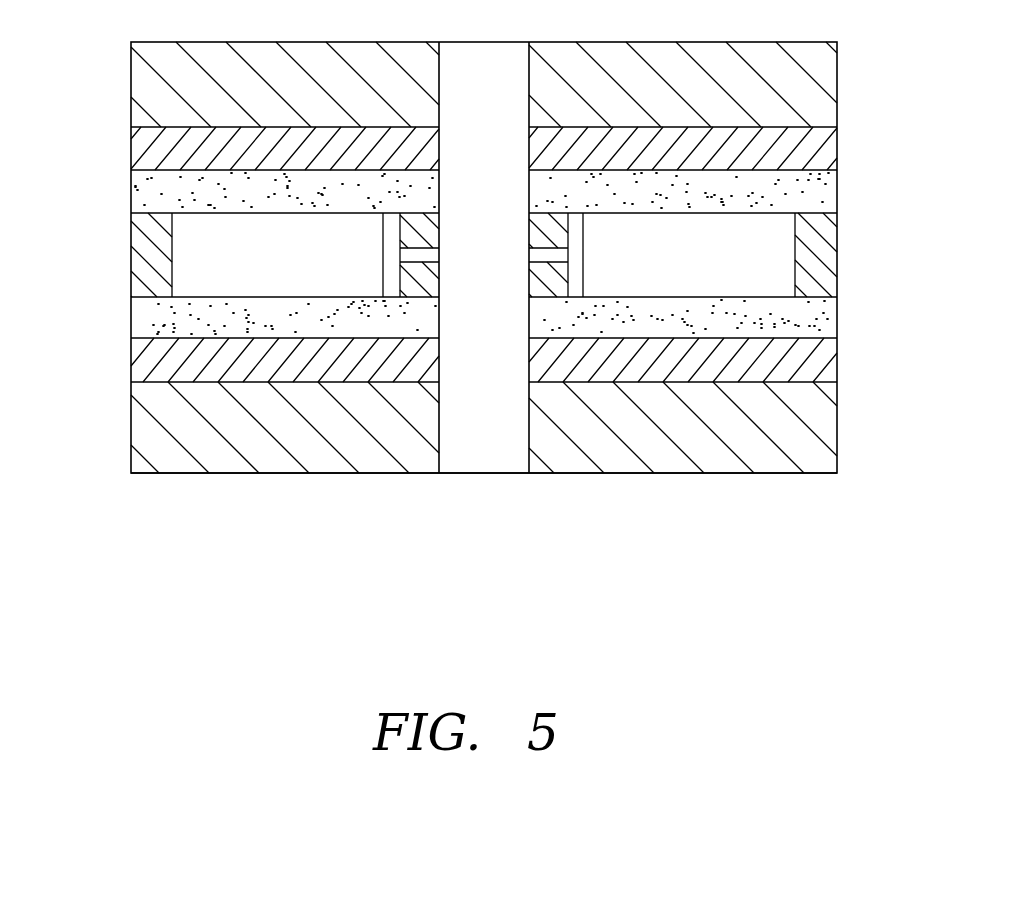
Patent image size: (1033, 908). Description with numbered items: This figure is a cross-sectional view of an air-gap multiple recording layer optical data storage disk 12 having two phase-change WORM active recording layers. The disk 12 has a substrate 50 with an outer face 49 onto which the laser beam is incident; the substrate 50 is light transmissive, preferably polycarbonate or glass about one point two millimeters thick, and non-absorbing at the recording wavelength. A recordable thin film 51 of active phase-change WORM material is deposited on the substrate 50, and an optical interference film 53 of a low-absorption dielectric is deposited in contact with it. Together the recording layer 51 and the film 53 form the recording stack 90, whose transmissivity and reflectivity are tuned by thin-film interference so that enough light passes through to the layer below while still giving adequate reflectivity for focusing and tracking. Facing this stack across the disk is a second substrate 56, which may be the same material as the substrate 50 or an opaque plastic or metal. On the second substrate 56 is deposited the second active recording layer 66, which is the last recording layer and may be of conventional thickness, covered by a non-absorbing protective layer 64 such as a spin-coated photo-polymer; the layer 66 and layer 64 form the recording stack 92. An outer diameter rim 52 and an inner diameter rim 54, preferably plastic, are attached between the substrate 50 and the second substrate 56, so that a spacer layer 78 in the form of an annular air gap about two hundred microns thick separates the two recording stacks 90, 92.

The optical data storage disk 12 is at (262, 553).
The outer face 49 is at (735, 474).
The substrate 50 is at (825, 417).
The recordable thin film 51 is at (825, 358).
The outer diameter rim 52 is at (825, 248).
The optical interference film 53 is at (823, 317).
The inner diameter rim 54 is at (543, 280).
The second substrate 56 is at (825, 85).
The protective layer 64 is at (827, 192).
The second active recording layer 66 is at (825, 153).
The spacer layer 78 is at (187, 253).
The recording stack 90 is at (119, 298).
The recording stack 92 is at (119, 130).